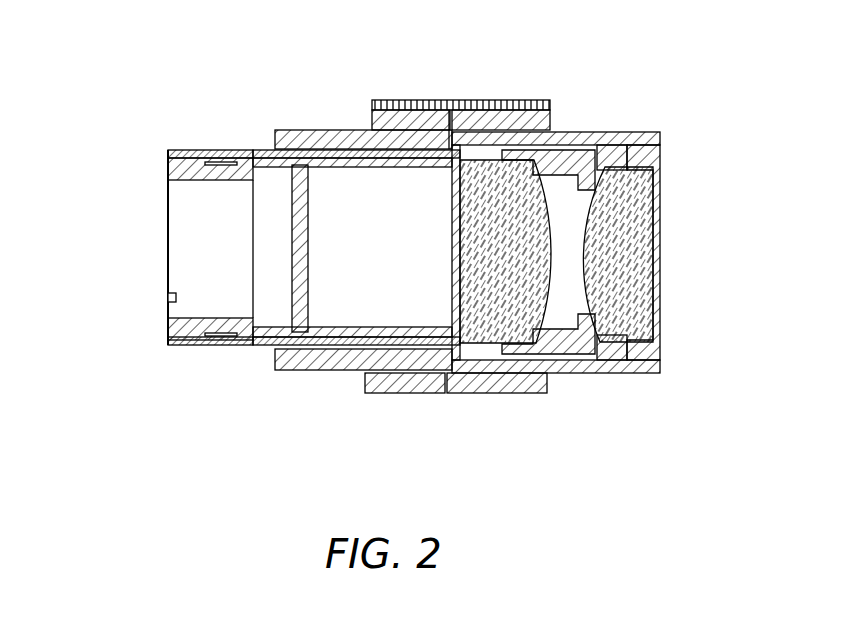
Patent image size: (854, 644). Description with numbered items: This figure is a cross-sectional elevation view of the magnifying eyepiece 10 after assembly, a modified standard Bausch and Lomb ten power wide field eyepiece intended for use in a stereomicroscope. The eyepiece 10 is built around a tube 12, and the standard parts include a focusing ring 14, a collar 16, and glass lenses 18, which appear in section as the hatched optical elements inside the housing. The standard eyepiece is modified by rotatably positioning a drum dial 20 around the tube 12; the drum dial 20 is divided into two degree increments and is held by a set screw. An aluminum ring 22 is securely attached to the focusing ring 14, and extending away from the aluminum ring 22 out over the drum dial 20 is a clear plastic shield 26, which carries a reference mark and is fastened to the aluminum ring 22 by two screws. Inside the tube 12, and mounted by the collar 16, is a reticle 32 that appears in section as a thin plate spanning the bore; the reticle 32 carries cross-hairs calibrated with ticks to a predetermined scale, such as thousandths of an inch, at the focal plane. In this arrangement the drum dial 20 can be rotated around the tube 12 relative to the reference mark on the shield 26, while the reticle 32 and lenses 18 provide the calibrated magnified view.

The magnifying eyepiece 10 is at (613, 373).
The tube 12 is at (370, 168).
The focusing ring 14 is at (290, 352).
The collar 16 is at (190, 180).
The glass lenses 18 is at (620, 259).
The drum dial 20 is at (458, 393).
The aluminum ring 22 is at (283, 372).
The clear plastic shield 26 is at (504, 100).
The reticle 32 is at (290, 243).